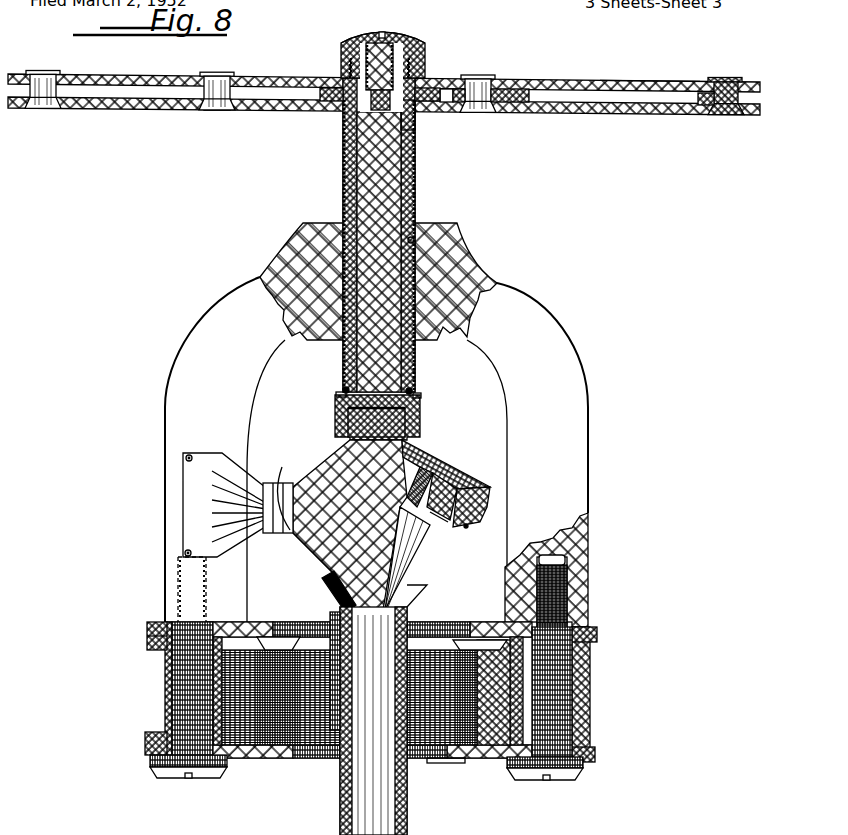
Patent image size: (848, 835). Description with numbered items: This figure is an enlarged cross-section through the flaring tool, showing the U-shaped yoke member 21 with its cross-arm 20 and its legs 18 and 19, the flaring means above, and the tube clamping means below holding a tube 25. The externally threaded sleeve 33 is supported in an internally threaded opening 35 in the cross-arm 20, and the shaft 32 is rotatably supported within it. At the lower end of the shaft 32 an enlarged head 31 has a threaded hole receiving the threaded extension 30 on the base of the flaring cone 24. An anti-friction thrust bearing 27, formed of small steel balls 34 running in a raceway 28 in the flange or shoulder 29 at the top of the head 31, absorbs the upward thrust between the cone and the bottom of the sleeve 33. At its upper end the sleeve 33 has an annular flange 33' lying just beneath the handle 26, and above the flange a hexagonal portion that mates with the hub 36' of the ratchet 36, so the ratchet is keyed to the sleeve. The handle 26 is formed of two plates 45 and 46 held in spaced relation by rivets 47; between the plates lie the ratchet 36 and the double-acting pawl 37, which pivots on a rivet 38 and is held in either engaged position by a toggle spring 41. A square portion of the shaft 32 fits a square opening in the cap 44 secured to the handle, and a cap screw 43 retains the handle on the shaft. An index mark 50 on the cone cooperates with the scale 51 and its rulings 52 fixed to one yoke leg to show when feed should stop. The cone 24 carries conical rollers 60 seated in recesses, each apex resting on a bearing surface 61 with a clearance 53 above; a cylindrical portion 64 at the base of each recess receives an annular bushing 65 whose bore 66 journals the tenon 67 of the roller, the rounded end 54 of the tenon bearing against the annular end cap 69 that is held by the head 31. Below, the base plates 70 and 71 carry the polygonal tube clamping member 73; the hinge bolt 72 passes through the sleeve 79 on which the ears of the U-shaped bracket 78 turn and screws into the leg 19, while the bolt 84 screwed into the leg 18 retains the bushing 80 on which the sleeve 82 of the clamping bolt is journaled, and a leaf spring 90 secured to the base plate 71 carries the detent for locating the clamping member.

The leg 18 is at (583, 555).
The leg 19 is at (163, 556).
The cross-arm 20 is at (473, 272).
The yoke member 21 is at (573, 350).
The flaring cone 24 is at (320, 550).
The tube 25 is at (407, 797).
The handle 26 is at (590, 82).
The anti-friction thrust bearing 27 is at (416, 387).
The raceway 28 is at (342, 389).
The flange or shoulder 29 is at (336, 394).
The threaded extension 30 is at (383, 420).
The enlarged head 31 is at (335, 411).
The shaft 32 is at (396, 193).
The sleeve 33 is at (397, 235).
The annular flange 33' is at (430, 117).
The steel balls 34 is at (421, 398).
The internally threaded opening 35 is at (415, 240).
The ratchet 36 is at (370, 111).
The hub 36' is at (347, 69).
The double-acting pawl 37 is at (515, 92).
The rivet 38 is at (480, 76).
The toggle spring 41 is at (700, 105).
The cap screw 43 is at (396, 42).
The cap 44 is at (424, 58).
The plate 45 is at (646, 86).
The plate 46 is at (646, 112).
The rivets 47 is at (45, 95).
The index mark 50 is at (284, 488).
The scale 51 is at (180, 497).
The rulings 52 is at (283, 533).
The clearance 53 is at (398, 525).
The rounded end 54 is at (465, 487).
The conical rollers 60 is at (427, 556).
The bearing surface 61 is at (380, 583).
The cylindrical portion 64 is at (412, 485).
The annular bushing 65 is at (438, 483).
The bore 66 is at (446, 528).
The tenon 67 is at (468, 527).
The annular end cap 69 is at (420, 450).
The base plate 70 is at (597, 635).
The base plate 71 is at (596, 755).
The hinge bolt 72 is at (185, 757).
The tube clamping member 73 is at (430, 663).
The U-shaped bracket 78 is at (147, 640).
The sleeve 79 is at (165, 668).
The bushing 80 is at (572, 678).
The sleeve 82 is at (590, 703).
The bolt 84 is at (562, 760).
The leaf spring 90 is at (430, 762).